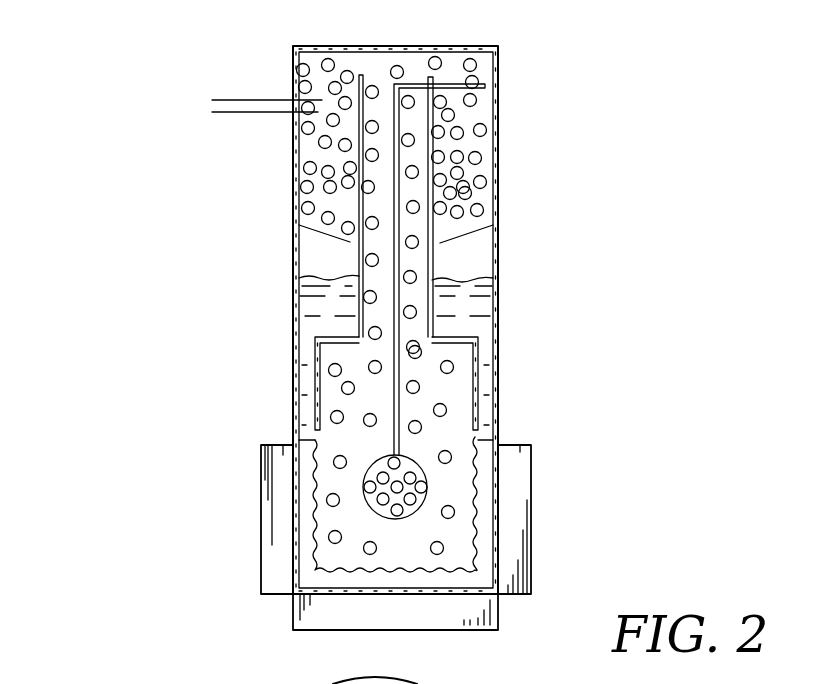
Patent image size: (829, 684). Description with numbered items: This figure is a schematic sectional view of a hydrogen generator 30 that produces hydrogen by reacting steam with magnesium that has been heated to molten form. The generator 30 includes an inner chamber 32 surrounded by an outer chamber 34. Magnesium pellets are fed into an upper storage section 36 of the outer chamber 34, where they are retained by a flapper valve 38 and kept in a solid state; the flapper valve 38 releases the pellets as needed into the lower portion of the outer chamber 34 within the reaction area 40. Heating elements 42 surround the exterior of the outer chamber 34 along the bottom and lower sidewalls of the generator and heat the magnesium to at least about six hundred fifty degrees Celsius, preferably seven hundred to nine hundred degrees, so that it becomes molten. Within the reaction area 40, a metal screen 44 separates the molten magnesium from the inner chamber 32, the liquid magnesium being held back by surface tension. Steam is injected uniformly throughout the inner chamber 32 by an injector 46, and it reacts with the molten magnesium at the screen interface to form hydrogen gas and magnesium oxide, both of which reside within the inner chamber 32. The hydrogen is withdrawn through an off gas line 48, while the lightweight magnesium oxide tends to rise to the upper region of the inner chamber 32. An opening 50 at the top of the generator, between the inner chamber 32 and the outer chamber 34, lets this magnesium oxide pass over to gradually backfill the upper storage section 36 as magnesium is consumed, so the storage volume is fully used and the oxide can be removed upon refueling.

The generator 30 is at (153, 68).
The inner chamber 32 is at (372, 317).
The outer chamber 34 is at (302, 378).
The upper storage section 36 is at (467, 123).
The flapper valve 38 is at (495, 243).
The reaction area 40 is at (545, 338).
The heating elements 42 is at (467, 618).
The metal screen 44 is at (317, 538).
The injector 46 is at (365, 487).
The off gas line 48 is at (230, 114).
The opening 50 is at (432, 60).